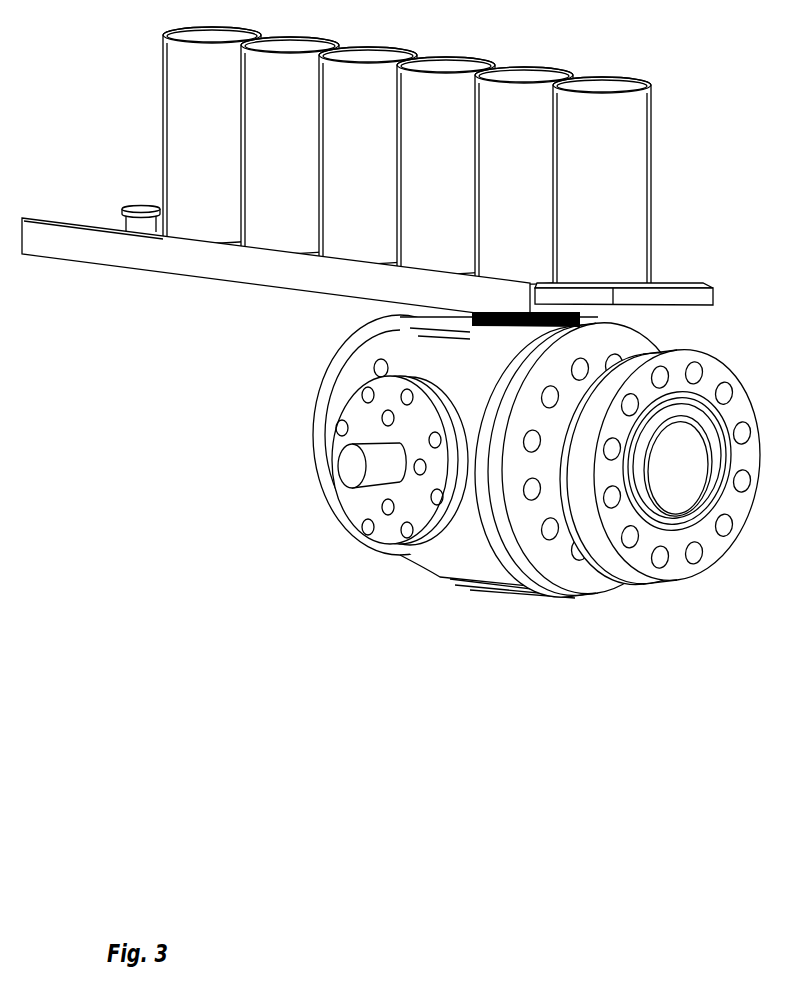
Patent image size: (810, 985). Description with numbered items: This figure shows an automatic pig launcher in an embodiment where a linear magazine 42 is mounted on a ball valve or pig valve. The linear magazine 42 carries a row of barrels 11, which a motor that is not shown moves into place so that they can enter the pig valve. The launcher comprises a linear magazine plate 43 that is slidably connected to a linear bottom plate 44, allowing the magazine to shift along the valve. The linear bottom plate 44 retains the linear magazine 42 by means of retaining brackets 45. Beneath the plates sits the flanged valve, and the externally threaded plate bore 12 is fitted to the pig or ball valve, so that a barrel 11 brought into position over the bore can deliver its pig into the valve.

The barrels 11 is at (202, 122).
The externally threaded plate bore 12 is at (617, 322).
The linear magazine 42 is at (407, 269).
The linear magazine plate 43 is at (688, 287).
The linear bottom plate 44 is at (258, 277).
The retaining brackets 45 is at (132, 212).